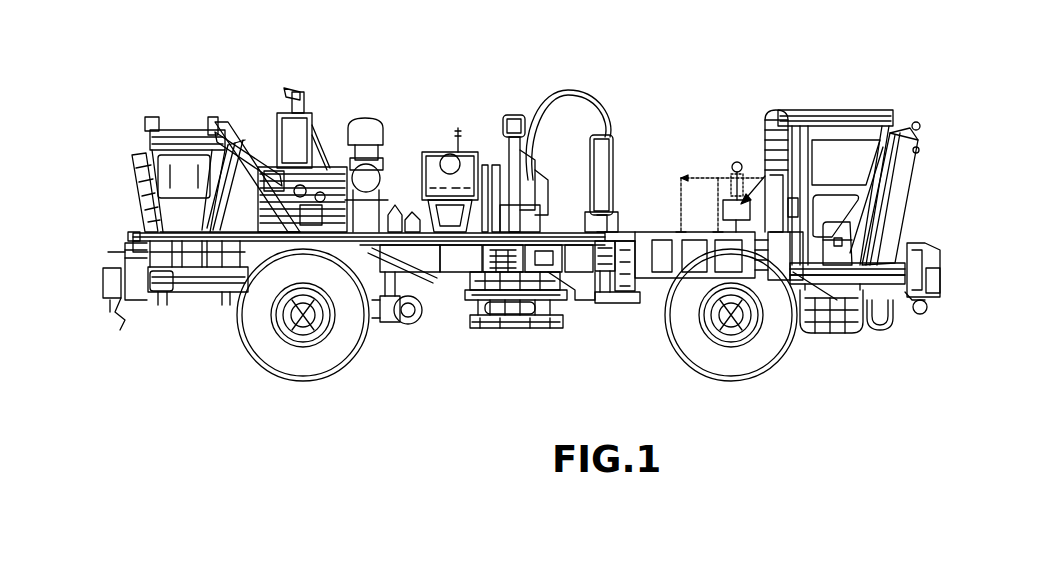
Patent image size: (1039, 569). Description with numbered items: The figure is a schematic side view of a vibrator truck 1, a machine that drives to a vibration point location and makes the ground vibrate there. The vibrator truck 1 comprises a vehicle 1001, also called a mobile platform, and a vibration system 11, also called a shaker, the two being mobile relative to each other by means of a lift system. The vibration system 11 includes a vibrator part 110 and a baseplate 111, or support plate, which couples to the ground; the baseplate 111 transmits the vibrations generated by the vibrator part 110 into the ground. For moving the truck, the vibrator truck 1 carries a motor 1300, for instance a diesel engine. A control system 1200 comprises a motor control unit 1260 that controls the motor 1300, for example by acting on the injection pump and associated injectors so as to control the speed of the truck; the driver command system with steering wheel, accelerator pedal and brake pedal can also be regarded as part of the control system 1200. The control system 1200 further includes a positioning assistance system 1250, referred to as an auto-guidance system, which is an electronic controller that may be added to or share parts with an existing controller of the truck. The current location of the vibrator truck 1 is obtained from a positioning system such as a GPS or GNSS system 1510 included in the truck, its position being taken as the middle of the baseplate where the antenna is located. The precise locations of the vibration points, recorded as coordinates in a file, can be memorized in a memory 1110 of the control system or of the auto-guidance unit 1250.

The vibrator truck 1 is at (209, 96).
The vehicle 1001 is at (137, 231).
The vibrator part 110 is at (468, 292).
The baseplate 111 is at (510, 333).
The vibration system 11 is at (577, 329).
The memory 1110 is at (668, 256).
The control system 1200 is at (768, 305).
The motor 1300 is at (827, 332).
The positioning assistance system 1250 is at (688, 234).
The motor control unit 1260 is at (718, 232).
The GPS or GNSS system 1510 is at (772, 112).